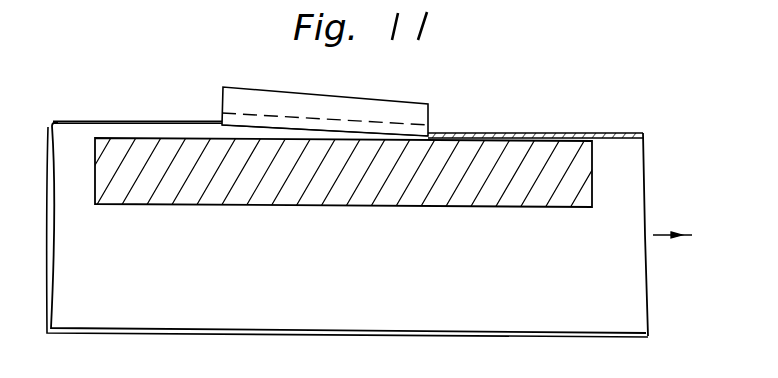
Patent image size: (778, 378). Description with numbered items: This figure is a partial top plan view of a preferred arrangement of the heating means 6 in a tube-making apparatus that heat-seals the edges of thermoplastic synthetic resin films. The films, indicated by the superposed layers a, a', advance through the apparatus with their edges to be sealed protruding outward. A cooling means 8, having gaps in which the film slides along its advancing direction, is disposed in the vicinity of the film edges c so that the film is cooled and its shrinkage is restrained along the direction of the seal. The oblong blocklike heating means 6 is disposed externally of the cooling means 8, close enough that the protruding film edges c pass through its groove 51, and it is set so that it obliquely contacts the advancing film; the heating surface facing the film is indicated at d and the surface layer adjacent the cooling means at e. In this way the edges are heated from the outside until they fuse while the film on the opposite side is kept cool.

The substrate body a is at (355, 235).
The outer surface layer of substrate a' is at (340, 226).
The film edges c is at (135, 128).
The surface layer d is at (97, 122).
The heating means 6 is at (252, 98).
The groove 51 is at (373, 127).
The cooling means 8 is at (498, 155).
The thin film layer e is at (557, 135).